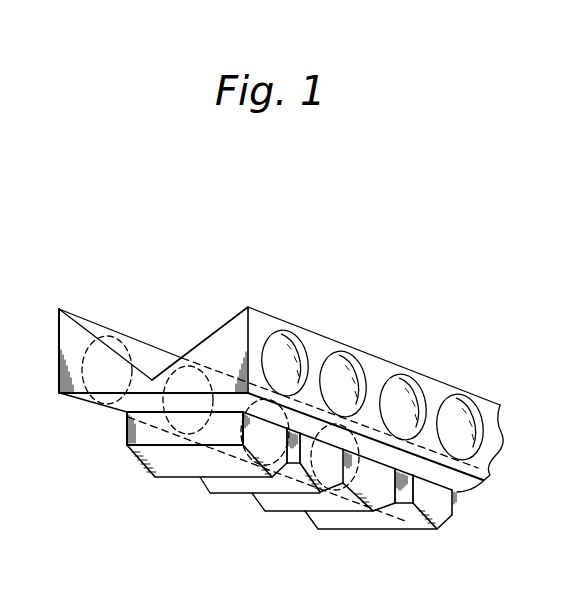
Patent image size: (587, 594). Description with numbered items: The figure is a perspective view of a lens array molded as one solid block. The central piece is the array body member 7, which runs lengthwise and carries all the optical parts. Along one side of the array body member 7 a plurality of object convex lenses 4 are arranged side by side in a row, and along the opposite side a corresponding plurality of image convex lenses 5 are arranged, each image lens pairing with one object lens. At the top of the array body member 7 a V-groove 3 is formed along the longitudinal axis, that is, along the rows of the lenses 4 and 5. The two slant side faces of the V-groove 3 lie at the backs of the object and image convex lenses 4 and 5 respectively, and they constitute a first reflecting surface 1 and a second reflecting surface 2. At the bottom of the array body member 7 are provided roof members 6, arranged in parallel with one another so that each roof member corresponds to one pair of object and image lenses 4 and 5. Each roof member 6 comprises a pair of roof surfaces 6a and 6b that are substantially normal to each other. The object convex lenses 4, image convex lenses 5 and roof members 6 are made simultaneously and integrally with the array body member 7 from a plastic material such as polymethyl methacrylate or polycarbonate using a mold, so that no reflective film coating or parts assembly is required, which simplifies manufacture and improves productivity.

The first reflecting surface 1 is at (144, 352).
The second reflecting surface 2 is at (229, 323).
The V-groove 3 is at (175, 343).
The object convex lenses 4 is at (58, 340).
The image convex lenses 5 is at (298, 342).
The roof members 6 is at (160, 465).
The roof surface 6a is at (243, 472).
The roof surface 6b is at (275, 472).
The array body member 7 is at (262, 327).